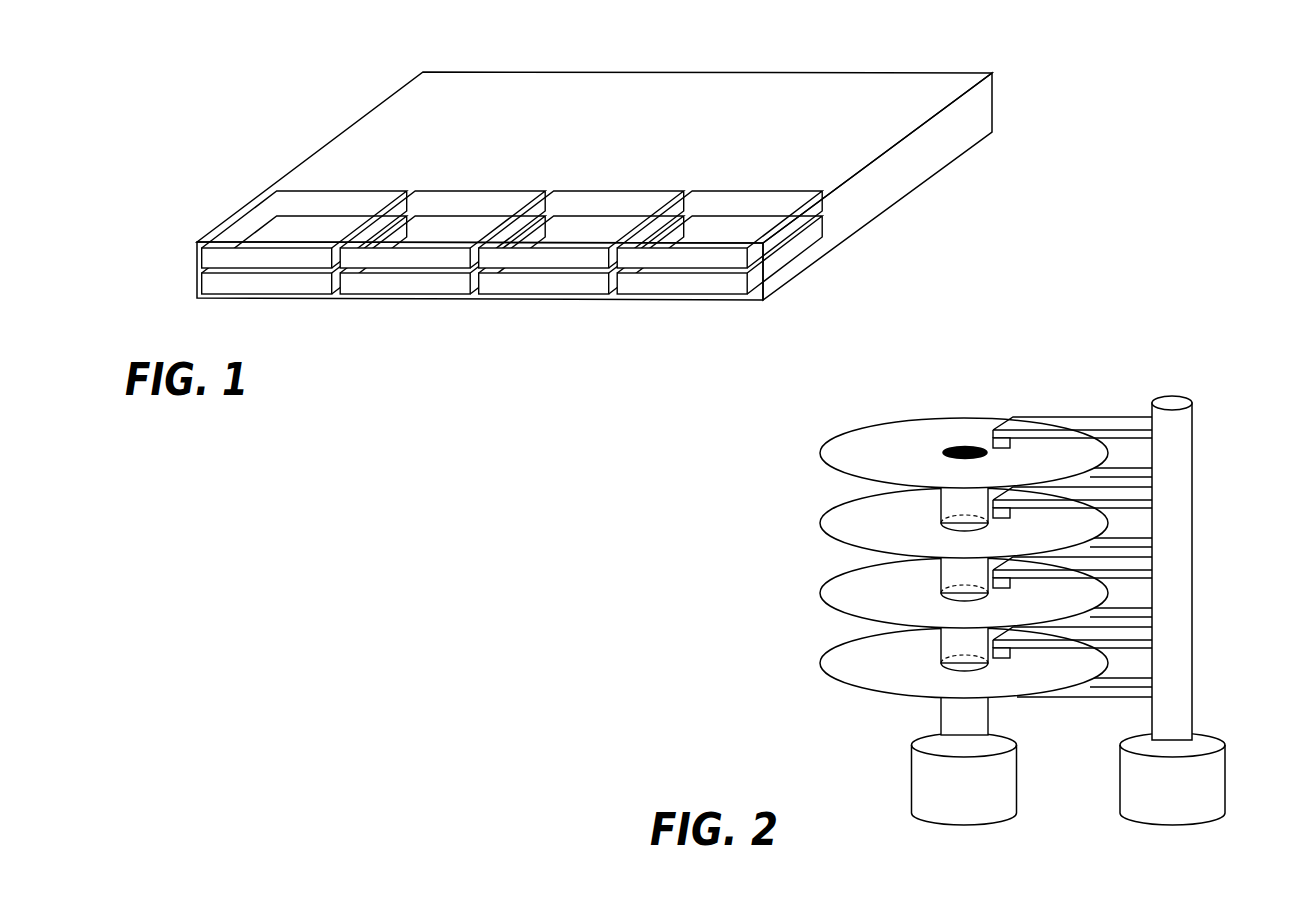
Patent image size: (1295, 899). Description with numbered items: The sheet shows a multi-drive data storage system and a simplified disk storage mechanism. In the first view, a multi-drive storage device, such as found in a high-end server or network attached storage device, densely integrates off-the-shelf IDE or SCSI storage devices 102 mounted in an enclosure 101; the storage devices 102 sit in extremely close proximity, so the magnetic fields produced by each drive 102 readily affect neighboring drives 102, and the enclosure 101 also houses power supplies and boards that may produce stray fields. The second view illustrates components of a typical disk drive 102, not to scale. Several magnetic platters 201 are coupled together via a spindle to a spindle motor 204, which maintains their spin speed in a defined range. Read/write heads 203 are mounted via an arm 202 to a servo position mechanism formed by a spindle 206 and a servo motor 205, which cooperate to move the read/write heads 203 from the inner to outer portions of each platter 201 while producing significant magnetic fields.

In FIG. 1, the enclosure 101 is at (341, 137).
In FIG. 1, the storage device 102 is at (207, 280).
In FIG. 2, the storage device 102 is at (1013, 574).
In FIG. 2, the platter 201 is at (848, 445).
In FIG. 2, the arm 202 is at (1069, 418).
In FIG. 2, the read/write head 203 is at (995, 445).
In FIG. 2, the spindle motor 204 is at (976, 804).
In FIG. 2, the servo motor 205 is at (1186, 798).
In FIG. 2, the spindle 206 is at (1188, 610).